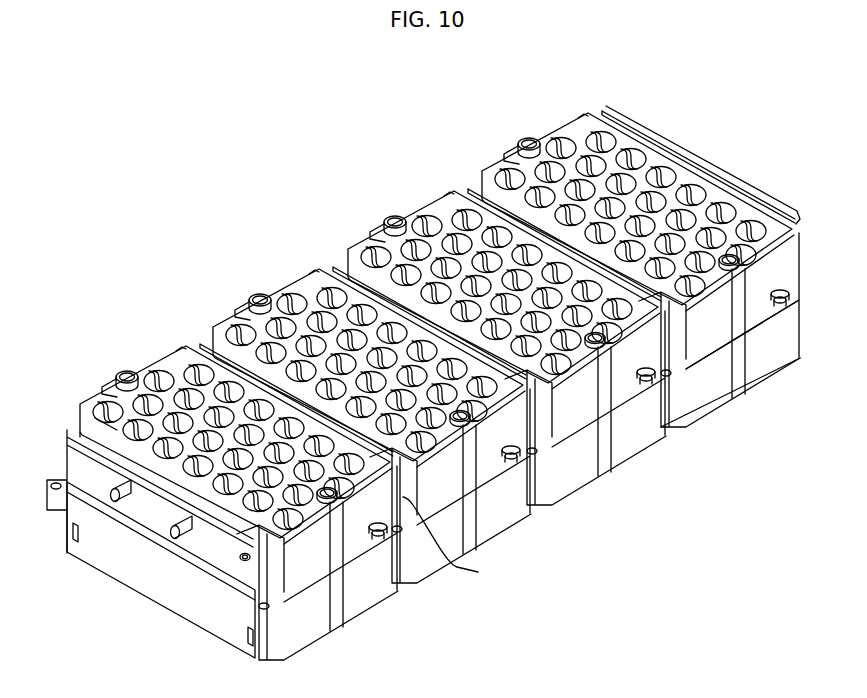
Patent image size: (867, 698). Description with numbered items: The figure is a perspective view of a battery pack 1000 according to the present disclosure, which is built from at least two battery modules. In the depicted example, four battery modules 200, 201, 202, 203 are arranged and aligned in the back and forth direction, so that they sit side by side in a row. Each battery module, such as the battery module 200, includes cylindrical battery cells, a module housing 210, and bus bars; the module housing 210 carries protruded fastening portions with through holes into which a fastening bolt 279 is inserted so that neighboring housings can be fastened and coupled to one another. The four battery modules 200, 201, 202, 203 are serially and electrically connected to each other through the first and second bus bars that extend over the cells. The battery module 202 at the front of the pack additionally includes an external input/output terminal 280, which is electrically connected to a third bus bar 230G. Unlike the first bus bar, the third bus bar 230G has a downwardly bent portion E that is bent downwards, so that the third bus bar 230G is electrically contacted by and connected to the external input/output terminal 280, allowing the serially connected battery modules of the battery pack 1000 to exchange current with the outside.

The battery pack 1000 is at (210, 72).
The battery module 200 is at (243, 289).
The battery module 201 is at (378, 211).
The battery module 202 is at (109, 364).
The battery module 203 is at (512, 133).
The module housing 210 is at (715, 380).
The third bus bar 230G is at (117, 450).
The fastening bolt 279 is at (461, 543).
The external input/output terminal 280 is at (173, 532).
The downwardly bent portion E is at (210, 540).